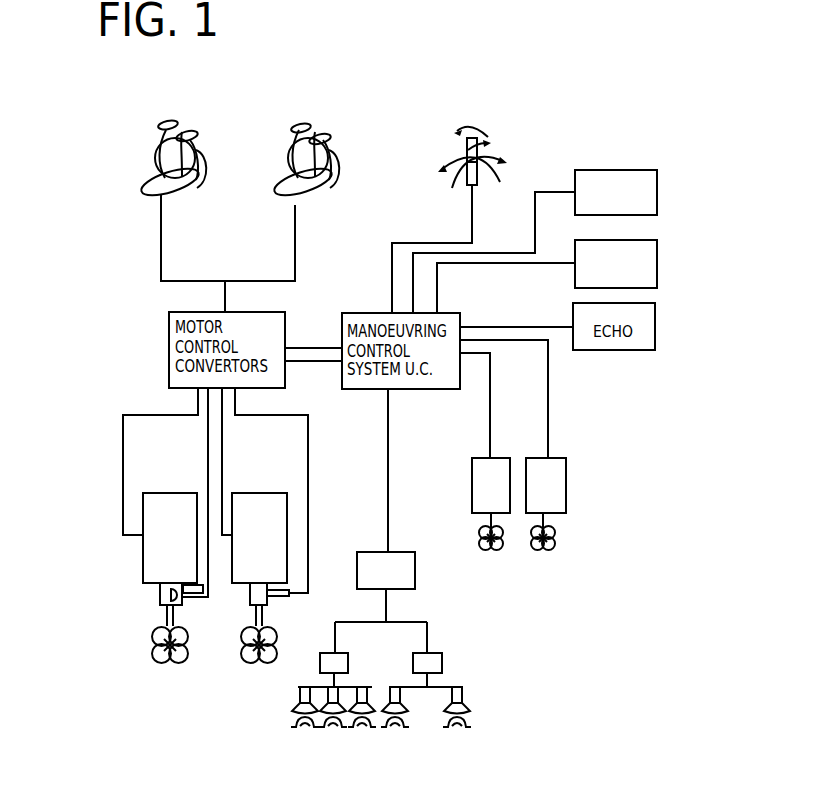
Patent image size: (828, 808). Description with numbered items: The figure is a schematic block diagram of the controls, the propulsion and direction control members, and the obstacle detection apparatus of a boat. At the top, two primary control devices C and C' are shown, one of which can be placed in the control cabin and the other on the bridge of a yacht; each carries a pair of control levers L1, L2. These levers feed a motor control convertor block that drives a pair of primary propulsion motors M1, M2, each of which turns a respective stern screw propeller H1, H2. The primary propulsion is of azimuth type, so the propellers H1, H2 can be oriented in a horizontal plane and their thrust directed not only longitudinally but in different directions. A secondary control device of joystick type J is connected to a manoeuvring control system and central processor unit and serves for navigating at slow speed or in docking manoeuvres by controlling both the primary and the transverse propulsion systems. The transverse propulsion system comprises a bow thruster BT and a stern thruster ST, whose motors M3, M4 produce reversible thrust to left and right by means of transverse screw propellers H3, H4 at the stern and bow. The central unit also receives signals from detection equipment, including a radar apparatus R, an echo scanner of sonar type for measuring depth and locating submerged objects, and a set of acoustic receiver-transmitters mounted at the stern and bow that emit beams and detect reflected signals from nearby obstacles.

The primary control device C is at (134, 199).
The primary control device C' is at (268, 201).
The control lever L1 is at (170, 125).
The control lever L2 is at (192, 135).
The joystick J is at (509, 134).
The radar apparatus R is at (657, 186).
The bow thruster BT is at (472, 462).
The stern thruster ST is at (566, 478).
The primary propulsion motor M1 is at (143, 572).
The primary propulsion motor M2 is at (245, 575).
The transverse propulsion motor M3 is at (482, 505).
The transverse propulsion motor M4 is at (555, 500).
The stern screw propeller H1 is at (154, 650).
The stern screw propeller H2 is at (258, 668).
The transverse screw propeller H3 is at (494, 548).
The transverse screw propeller H4 is at (550, 547).